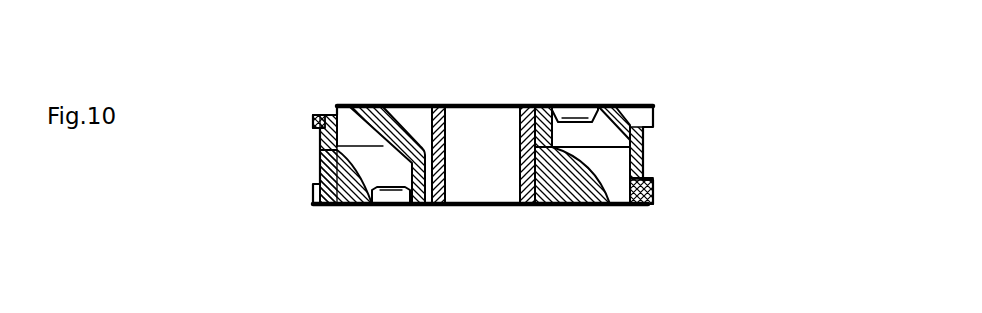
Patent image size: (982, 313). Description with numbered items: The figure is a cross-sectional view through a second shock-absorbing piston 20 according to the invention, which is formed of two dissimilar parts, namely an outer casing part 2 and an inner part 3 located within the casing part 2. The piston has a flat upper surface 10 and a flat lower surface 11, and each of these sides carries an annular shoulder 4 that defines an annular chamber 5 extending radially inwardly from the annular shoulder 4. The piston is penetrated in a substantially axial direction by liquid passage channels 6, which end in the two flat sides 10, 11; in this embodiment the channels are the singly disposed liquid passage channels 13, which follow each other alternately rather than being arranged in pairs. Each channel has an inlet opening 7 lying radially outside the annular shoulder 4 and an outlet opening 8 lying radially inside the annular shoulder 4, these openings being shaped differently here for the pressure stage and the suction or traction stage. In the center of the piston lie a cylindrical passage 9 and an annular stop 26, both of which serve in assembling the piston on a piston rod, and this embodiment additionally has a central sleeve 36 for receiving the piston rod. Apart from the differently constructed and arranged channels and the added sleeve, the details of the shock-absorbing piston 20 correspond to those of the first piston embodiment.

The upper surface 10 is at (342, 97).
The lower surface 11 is at (317, 215).
The shock-absorbing piston 20 is at (743, 130).
The outer casing part 2 is at (327, 208).
The inner part 3 is at (407, 103).
The annular shoulder 4 is at (353, 103).
The annular chamber 5 is at (382, 103).
The liquid passage channel 6 is at (383, 157).
The inlet opening 7 is at (325, 120).
The outlet opening 8 is at (580, 103).
The cylindrical passage 9 is at (486, 155).
The singly disposed liquid passage channel 13 is at (479, 155).
The annular stop 26 is at (437, 103).
The central sleeve 36 is at (520, 103).